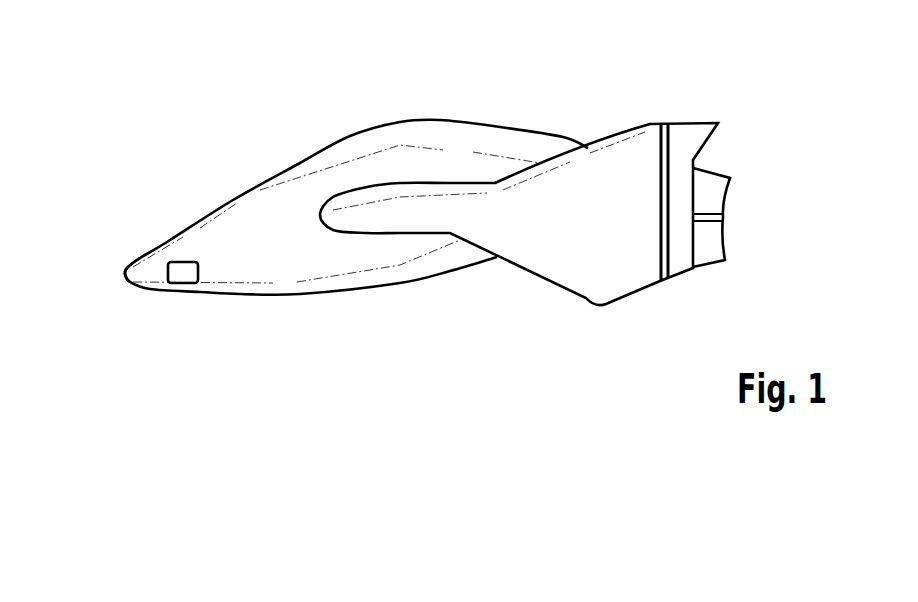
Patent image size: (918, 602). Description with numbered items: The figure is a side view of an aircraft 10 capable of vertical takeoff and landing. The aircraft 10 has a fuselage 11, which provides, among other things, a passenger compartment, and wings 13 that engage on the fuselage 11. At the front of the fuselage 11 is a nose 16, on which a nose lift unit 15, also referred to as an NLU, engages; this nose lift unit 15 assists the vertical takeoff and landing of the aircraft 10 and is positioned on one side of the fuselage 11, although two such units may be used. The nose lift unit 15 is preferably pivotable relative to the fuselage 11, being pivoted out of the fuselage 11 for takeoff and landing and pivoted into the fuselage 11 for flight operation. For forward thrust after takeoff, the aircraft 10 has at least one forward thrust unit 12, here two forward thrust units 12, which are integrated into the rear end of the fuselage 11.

The aircraft 10 is at (437, 192).
The fuselage 11 is at (355, 140).
The forward thrust unit 12 is at (736, 217).
The wing 13 is at (557, 272).
The nose lift unit 15 is at (183, 291).
The nose 16 is at (125, 272).